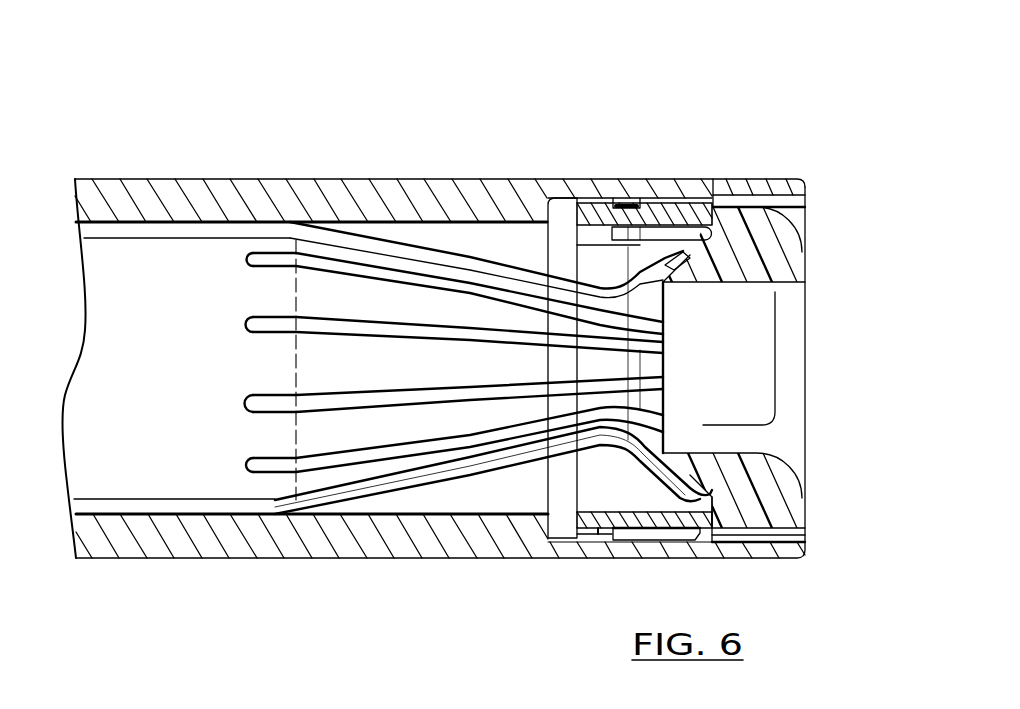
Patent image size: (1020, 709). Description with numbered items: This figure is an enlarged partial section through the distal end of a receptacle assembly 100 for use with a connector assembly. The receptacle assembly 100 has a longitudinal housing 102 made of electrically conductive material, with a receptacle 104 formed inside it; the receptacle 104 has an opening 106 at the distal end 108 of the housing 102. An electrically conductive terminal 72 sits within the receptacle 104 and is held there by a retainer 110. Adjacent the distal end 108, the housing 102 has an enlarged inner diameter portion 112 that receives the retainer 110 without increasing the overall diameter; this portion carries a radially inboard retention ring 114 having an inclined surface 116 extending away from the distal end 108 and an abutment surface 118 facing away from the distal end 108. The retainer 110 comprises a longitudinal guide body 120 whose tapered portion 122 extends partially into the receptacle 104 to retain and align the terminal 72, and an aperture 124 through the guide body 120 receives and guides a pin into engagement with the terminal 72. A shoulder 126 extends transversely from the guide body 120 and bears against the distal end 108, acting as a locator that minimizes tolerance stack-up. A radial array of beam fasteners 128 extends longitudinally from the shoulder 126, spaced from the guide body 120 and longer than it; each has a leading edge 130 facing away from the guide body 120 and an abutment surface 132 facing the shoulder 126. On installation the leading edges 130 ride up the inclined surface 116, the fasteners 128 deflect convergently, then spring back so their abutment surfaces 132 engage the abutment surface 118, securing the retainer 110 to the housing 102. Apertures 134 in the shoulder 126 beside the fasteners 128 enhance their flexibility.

The receptacle assembly 100 is at (770, 96).
The longitudinal housing 102 is at (243, 179).
The receptacle 104 is at (402, 230).
The electrically conductive terminal 72 is at (460, 484).
The opening 106 is at (715, 212).
The distal end 108 is at (715, 190).
The retainer 110 is at (784, 172).
The enlarged inner diameter portion 112 is at (548, 210).
The retention ring 114 is at (622, 205).
The inclined surface 116 is at (655, 203).
The abutment surface 118 is at (592, 203).
The longitudinal guide body 120 is at (735, 260).
The tapered portion 122 is at (708, 490).
The aperture 124 is at (725, 283).
The shoulder 126 is at (782, 559).
The fasteners 128 is at (598, 529).
The leading edge 130 is at (577, 528).
The abutment surface 132 is at (615, 530).
The apertures 134 is at (778, 540).